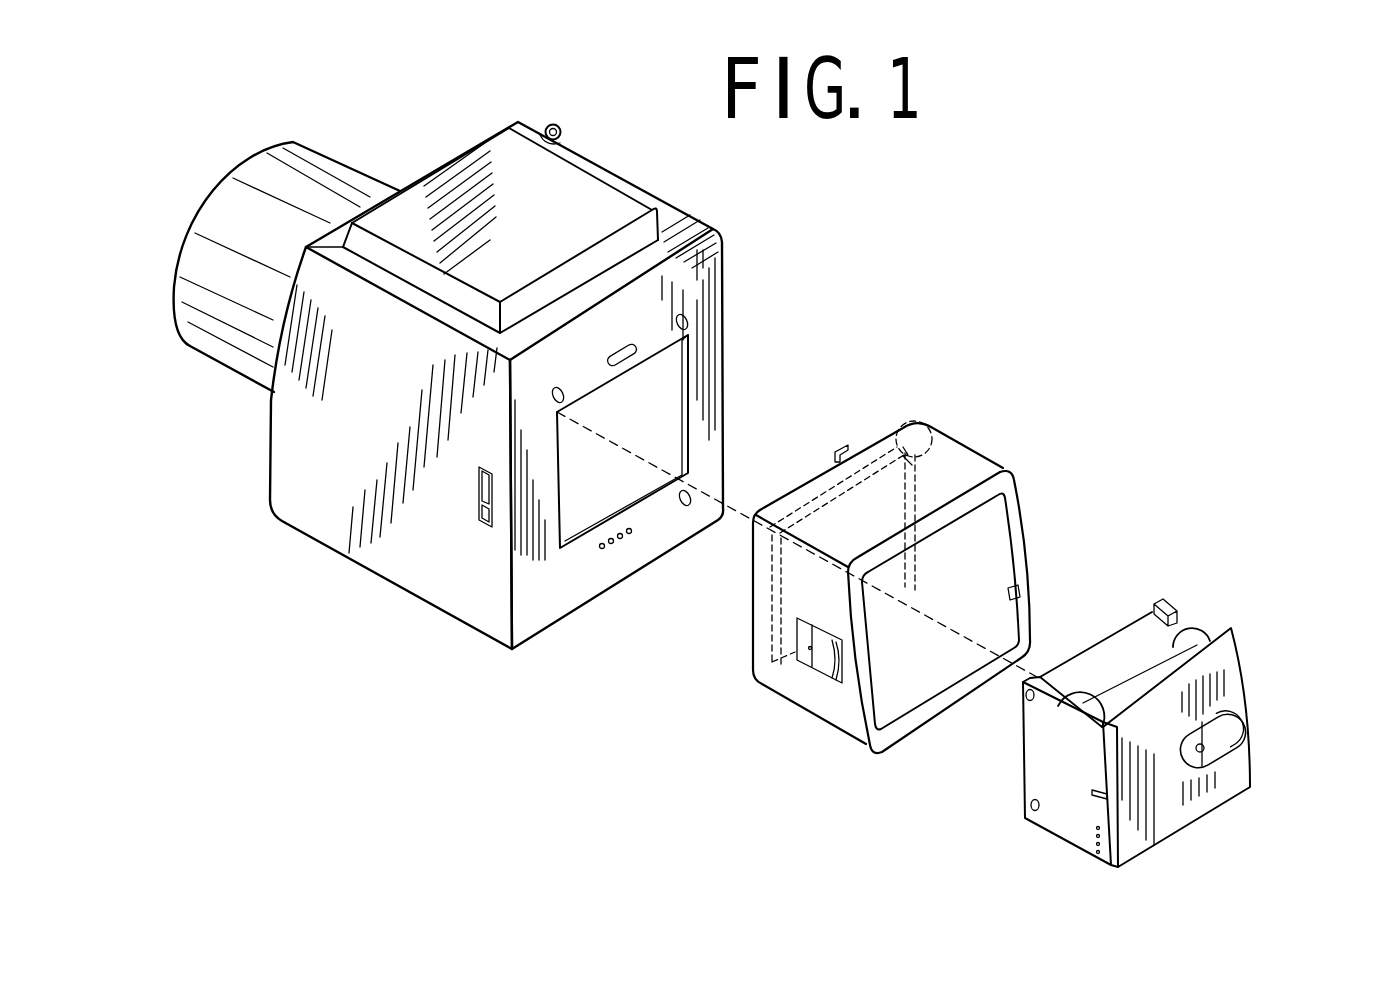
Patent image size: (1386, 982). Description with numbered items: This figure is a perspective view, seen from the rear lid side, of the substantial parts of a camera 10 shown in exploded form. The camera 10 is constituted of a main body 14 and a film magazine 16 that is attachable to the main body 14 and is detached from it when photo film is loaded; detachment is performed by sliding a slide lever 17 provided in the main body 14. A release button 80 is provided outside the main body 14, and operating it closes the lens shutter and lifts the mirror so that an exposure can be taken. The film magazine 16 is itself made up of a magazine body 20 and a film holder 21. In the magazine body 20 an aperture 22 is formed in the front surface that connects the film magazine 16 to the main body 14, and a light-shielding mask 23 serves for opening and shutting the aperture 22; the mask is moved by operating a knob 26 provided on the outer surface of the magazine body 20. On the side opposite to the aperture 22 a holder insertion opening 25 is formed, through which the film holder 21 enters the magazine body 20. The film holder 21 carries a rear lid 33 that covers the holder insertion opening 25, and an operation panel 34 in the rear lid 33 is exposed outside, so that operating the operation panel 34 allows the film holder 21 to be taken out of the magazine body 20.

The camera 10 is at (278, 609).
The main body 14 is at (678, 188).
The film magazine 16 is at (1102, 397).
The slide lever 17 is at (487, 486).
The magazine body 20 is at (925, 549).
The film holder 21 is at (1171, 725).
The aperture 22 is at (938, 430).
The light-shielding mask 23 is at (897, 420).
The holder insertion opening 25 is at (905, 680).
The knob 26 is at (823, 667).
The rear lid 33 is at (1187, 812).
The operation panel 34 is at (1225, 767).
The release button 80 is at (558, 124).